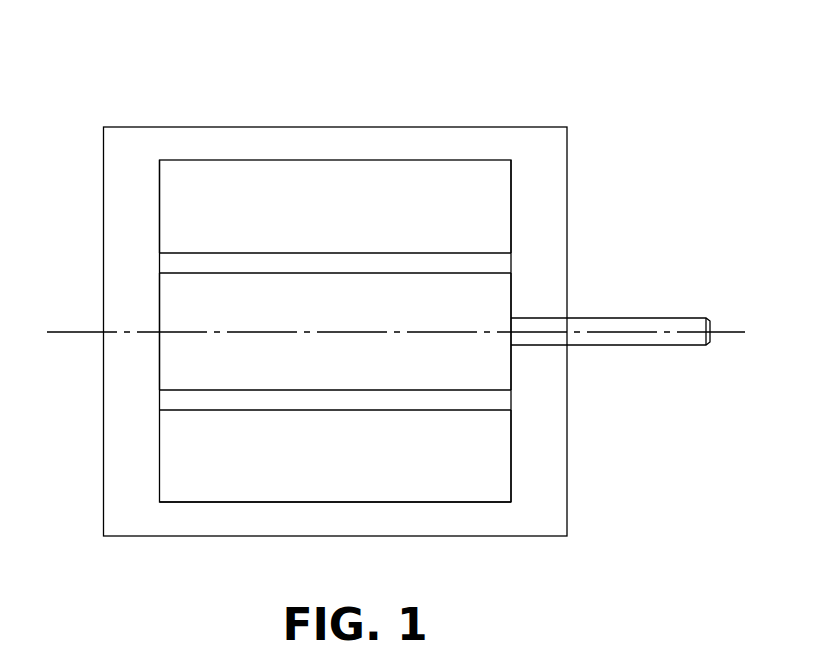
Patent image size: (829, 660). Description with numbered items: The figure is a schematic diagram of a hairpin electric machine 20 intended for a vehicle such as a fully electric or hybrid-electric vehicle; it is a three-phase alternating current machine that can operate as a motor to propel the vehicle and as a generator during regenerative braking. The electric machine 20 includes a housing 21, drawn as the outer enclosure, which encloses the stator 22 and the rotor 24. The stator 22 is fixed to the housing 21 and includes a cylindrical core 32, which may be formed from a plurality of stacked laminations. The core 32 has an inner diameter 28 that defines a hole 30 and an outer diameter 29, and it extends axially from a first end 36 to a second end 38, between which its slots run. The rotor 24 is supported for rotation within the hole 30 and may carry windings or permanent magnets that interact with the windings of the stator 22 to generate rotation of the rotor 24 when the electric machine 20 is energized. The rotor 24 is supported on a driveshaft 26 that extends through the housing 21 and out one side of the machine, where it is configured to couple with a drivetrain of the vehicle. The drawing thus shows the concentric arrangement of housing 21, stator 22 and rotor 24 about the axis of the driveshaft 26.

The hairpin electric machine 20 is at (532, 48).
The housing 21 is at (337, 127).
The stator 22 is at (223, 159).
The rotor 24 is at (158, 307).
The driveshaft 26 is at (618, 318).
The inner diameter 28 is at (483, 252).
The outer diameter 29 is at (228, 502).
The hole 30 is at (530, 397).
The cylindrical core 32 is at (511, 207).
The first end 36 is at (157, 212).
The second end 38 is at (511, 453).